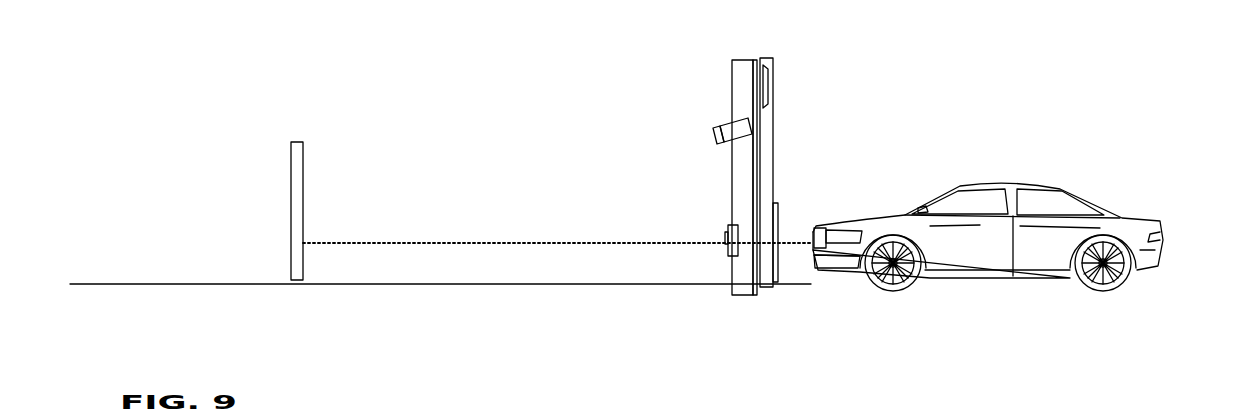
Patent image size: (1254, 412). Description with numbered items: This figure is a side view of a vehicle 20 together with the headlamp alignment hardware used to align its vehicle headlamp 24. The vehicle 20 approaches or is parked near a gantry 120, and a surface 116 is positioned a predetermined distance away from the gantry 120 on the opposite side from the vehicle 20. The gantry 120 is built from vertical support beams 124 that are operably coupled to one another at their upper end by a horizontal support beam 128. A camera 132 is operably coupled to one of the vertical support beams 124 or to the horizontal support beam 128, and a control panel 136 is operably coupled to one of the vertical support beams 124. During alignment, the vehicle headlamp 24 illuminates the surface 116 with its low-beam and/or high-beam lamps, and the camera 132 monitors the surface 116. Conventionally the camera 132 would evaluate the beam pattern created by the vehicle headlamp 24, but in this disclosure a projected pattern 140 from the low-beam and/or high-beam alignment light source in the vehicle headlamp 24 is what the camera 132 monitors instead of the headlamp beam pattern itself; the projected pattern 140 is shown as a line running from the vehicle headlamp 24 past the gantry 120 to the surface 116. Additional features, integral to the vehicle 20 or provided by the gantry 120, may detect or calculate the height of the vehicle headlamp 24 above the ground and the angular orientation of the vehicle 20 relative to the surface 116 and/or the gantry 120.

The vehicle 20 is at (1107, 196).
The vehicle headlamp 24 is at (832, 254).
The surface 116 is at (298, 145).
The gantry 120 is at (739, 57).
The vertical support beams 124 is at (745, 172).
The horizontal support beam 128 is at (766, 83).
The camera 132 is at (722, 127).
The control panel 136 is at (731, 250).
The projected pattern 140 is at (404, 243).